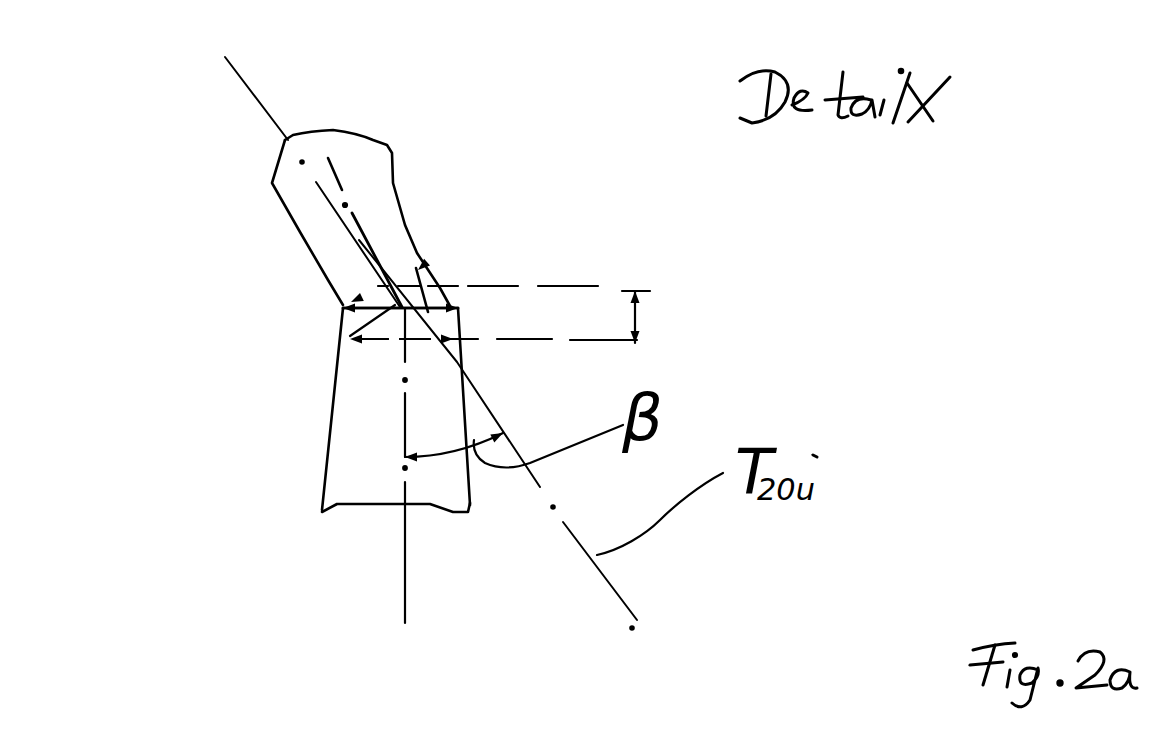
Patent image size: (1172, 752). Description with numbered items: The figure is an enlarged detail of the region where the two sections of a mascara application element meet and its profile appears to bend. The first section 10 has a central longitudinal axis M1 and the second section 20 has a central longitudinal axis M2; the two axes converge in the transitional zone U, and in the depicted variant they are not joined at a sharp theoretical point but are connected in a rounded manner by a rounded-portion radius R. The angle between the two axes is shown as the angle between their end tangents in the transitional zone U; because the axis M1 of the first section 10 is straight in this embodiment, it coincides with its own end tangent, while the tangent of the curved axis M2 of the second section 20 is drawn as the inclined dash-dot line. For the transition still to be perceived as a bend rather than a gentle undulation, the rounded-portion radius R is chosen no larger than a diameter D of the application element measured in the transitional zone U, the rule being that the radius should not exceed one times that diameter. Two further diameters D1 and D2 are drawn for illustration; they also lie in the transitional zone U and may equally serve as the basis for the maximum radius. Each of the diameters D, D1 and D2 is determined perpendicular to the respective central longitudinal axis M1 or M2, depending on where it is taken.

The first section 10 is at (342, 443).
The second section 20 is at (388, 201).
The central longitudinal axis M1 is at (405, 587).
The central longitudinal axis M2 is at (328, 150).
The diameter D is at (351, 302).
The diameter D1 is at (418, 270).
The diameter D2 is at (424, 336).
The rounded-portion radius R is at (350, 336).
The transitional zone U is at (640, 317).